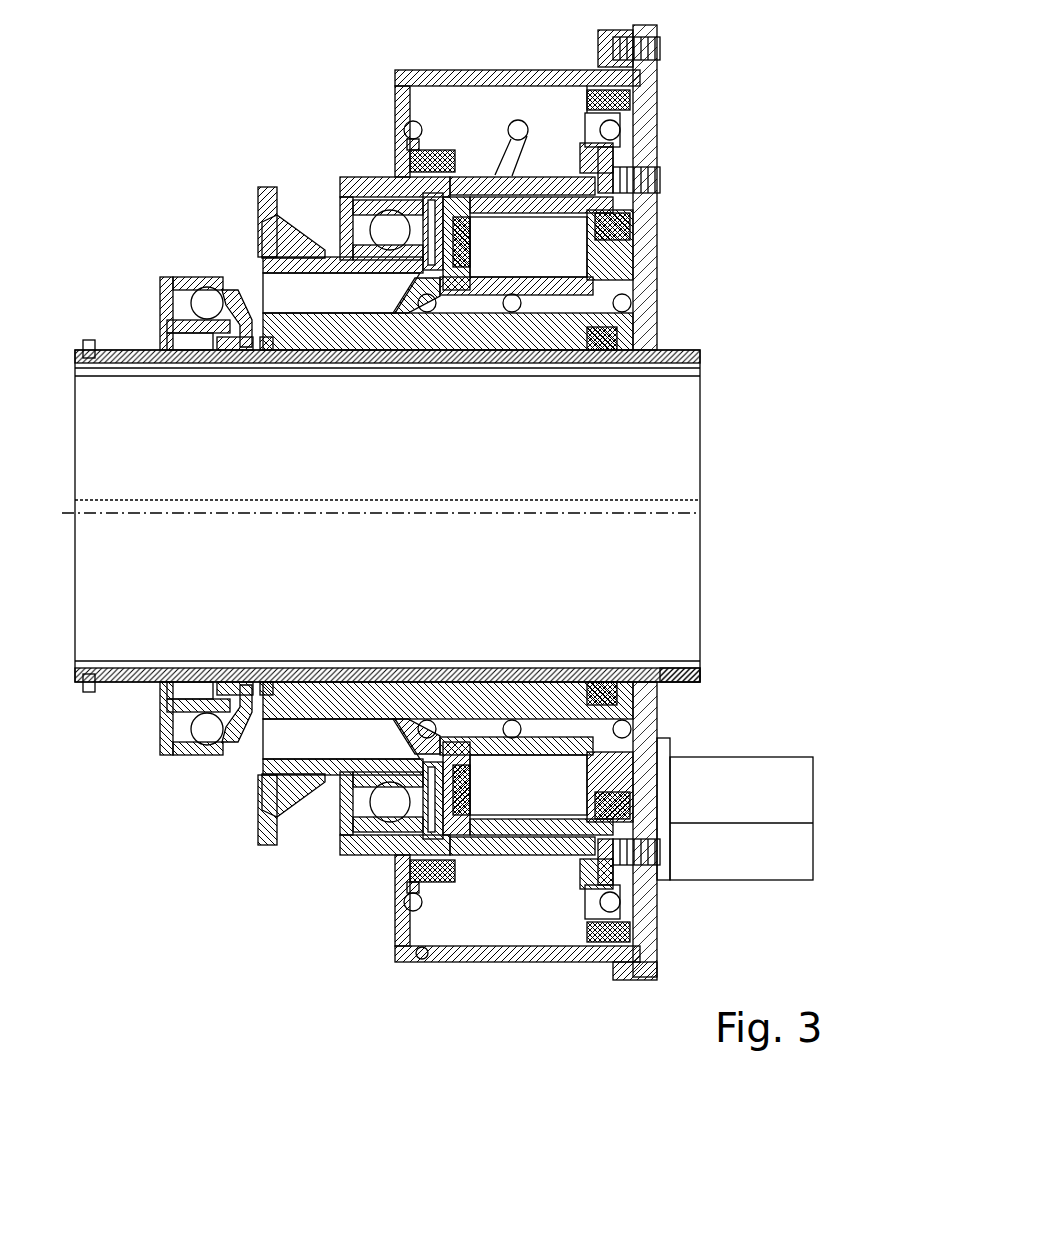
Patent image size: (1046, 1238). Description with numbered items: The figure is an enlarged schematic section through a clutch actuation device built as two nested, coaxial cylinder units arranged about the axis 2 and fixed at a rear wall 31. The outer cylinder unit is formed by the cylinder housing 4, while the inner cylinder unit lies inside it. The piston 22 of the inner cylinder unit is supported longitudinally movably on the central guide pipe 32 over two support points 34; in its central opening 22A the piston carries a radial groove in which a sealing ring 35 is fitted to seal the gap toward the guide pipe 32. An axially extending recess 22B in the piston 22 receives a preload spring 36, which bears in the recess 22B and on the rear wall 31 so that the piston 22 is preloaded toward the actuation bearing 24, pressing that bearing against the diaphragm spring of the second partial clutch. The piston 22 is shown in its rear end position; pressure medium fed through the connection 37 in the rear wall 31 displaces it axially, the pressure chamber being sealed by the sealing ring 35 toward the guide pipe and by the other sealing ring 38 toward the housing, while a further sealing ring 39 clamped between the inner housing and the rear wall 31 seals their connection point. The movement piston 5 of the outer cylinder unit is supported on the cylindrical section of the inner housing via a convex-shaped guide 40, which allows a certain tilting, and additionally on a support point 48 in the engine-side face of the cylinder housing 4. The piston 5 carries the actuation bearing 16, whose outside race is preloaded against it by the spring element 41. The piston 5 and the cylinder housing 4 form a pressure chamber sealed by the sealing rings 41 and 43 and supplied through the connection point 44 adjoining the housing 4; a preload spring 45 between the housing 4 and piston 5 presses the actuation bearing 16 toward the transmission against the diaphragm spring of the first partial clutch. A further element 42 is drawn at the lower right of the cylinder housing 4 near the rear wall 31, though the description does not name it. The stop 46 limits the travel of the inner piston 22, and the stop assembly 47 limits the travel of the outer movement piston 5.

The axis 2 is at (75, 513).
The cylinder housing 4 is at (557, 100).
The movement piston 5 is at (633, 125).
The actuation bearing 16 is at (355, 233).
The piston 22 is at (625, 272).
The central opening 22A is at (328, 686).
The recess 22B is at (630, 732).
The actuation bearing 24 is at (182, 752).
The rear wall 31 is at (648, 930).
The central guide pipe 32 is at (687, 672).
The support points 34 is at (283, 352).
The sealing ring 35 is at (600, 352).
The preload spring 36 is at (630, 303).
The connection 37 is at (650, 797).
The sealing ring 38 is at (650, 818).
The sealing ring 39 is at (640, 212).
The guide 40 is at (490, 173).
The spring element 41 is at (395, 180).
The seal 42 is at (615, 948).
The sealing ring 43 is at (415, 878).
The connection point 44 is at (425, 962).
The preload spring 45 is at (413, 120).
The stop 46 is at (89, 340).
The stop assembly 47 is at (478, 177).
The support point 48 is at (405, 155).